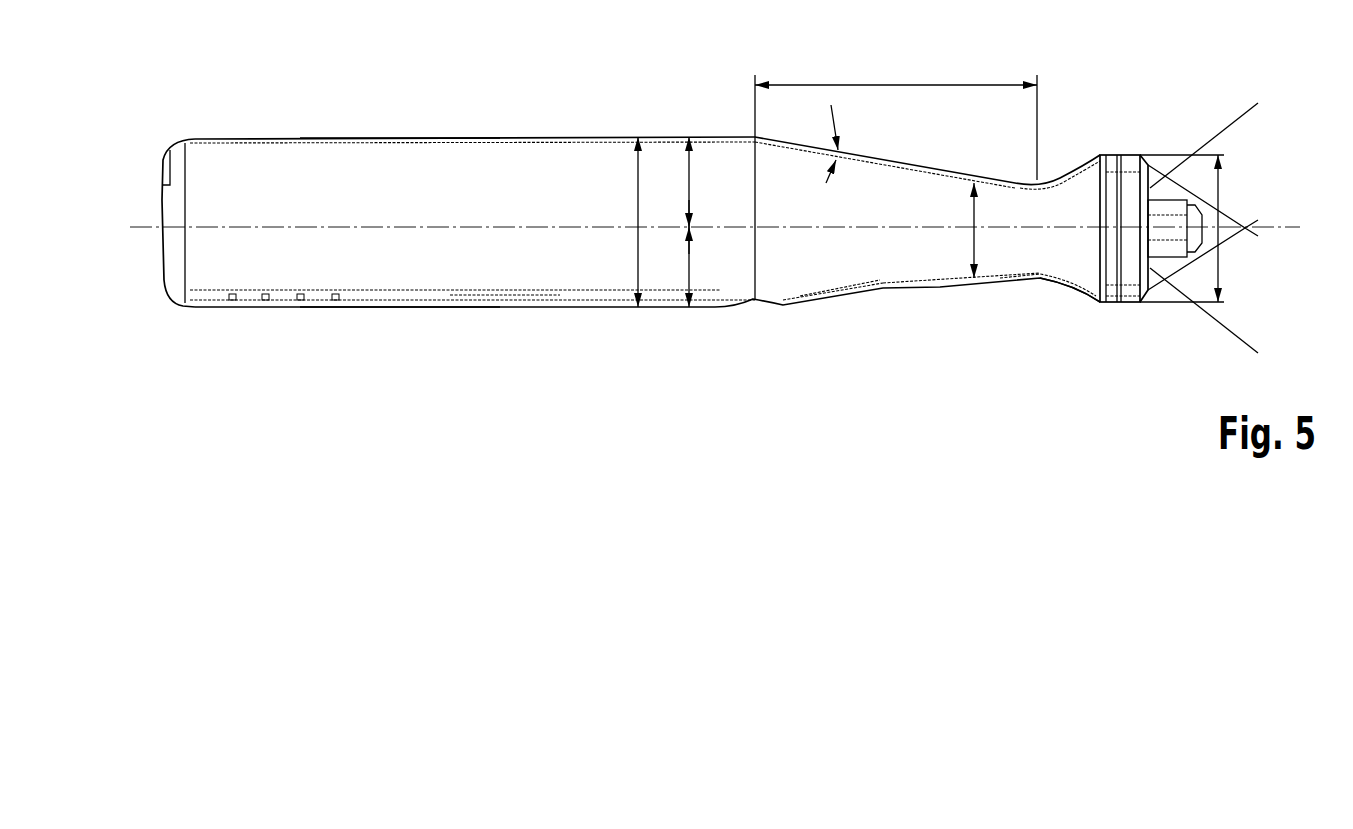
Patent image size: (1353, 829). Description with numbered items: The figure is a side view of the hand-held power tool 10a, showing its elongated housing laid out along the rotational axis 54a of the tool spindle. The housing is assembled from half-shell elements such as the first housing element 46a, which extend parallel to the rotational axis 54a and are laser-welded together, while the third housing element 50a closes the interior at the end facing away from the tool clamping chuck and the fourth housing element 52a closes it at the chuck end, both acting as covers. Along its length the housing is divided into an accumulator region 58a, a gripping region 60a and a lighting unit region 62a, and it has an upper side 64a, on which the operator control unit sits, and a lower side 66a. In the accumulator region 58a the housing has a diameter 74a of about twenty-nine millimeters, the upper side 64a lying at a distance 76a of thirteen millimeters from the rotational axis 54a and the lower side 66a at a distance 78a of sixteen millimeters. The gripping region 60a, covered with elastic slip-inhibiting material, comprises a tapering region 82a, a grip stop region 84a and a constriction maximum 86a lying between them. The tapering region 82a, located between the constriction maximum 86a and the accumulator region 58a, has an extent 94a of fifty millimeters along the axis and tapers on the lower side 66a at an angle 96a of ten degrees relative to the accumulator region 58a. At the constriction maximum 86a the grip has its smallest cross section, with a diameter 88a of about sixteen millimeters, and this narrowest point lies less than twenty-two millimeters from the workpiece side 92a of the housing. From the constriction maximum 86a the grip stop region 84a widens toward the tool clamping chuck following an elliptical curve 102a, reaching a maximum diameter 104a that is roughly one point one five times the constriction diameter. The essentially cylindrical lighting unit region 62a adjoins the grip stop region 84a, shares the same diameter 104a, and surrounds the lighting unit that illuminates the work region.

The hand-held power tool 10a is at (233, 385).
The first housing element 46a is at (435, 293).
The third housing element 50a is at (176, 255).
The fourth housing element 52a is at (1128, 292).
The rotational axis 54a is at (1287, 225).
The accumulator region 58a is at (493, 340).
The gripping region 60a is at (977, 323).
The lighting unit region 62a is at (1120, 325).
The upper side 64a is at (378, 310).
The lower side 66a is at (386, 138).
The diameter of the accumulator region 74a is at (637, 181).
The distance of the upper side from the rotational axis 76a is at (689, 285).
The distance of the lower side from the rotational axis 78a is at (689, 181).
The tapering region 82a is at (889, 300).
The grip stop region 84a is at (1072, 310).
The constriction maximum 86a is at (1037, 288).
The diameter at the constriction maximum 88a is at (973, 243).
The workpiece side 92a is at (1153, 186).
The extent of the tapering region 94a is at (896, 85).
The taper angle 96a is at (833, 147).
The elliptical curve 102a is at (1083, 172).
The maximum diameter 104a is at (1222, 262).